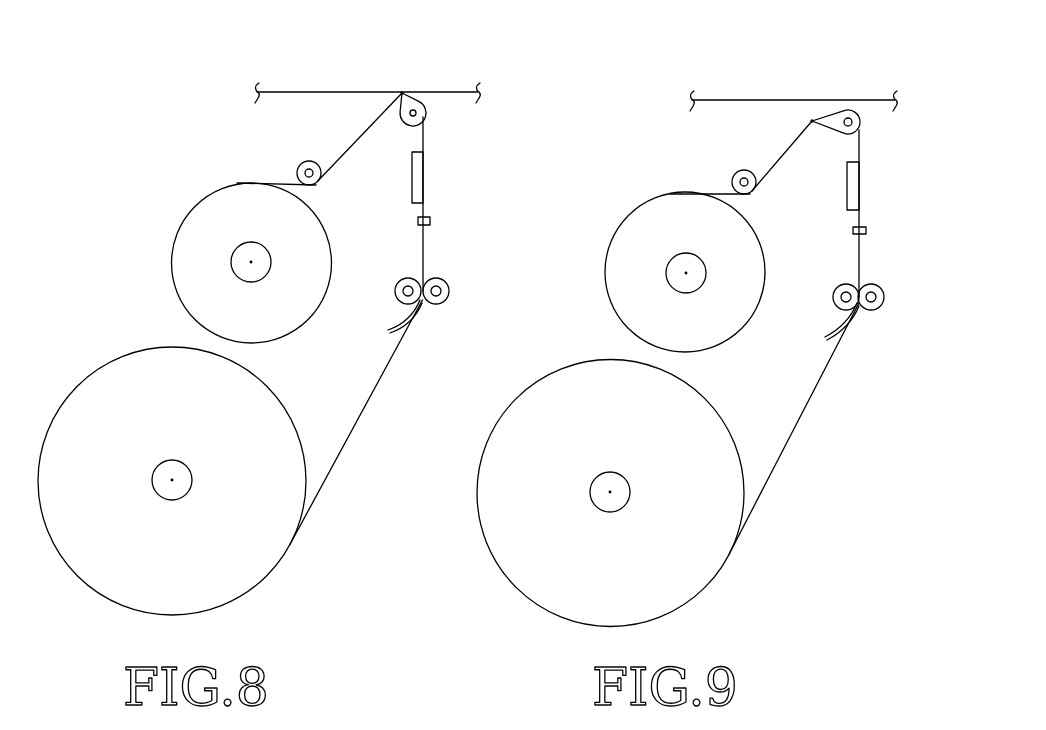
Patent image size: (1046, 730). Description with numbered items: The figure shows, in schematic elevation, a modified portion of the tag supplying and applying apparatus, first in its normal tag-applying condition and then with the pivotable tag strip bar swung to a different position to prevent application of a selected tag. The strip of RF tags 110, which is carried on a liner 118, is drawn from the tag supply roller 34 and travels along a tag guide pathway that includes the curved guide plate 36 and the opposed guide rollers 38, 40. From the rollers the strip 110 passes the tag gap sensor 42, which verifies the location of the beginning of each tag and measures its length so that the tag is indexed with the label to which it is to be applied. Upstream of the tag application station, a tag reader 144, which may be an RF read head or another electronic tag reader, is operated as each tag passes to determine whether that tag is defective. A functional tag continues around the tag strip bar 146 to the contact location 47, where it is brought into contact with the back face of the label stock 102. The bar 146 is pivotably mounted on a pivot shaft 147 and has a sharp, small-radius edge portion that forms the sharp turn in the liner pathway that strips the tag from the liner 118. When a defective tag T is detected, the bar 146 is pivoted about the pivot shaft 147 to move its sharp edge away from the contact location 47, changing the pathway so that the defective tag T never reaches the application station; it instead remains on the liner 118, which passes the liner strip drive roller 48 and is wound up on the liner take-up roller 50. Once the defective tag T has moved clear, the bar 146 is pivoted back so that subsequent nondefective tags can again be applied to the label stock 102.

In FIG. 8, the tag supply roller 34 is at (178, 492).
In FIG. 9, the tag supply roller 34 is at (618, 502).
In FIG. 8, the curved guide plate 36 is at (392, 332).
In FIG. 9, the curved guide plate 36 is at (828, 337).
In FIG. 8, the guide roller 38 is at (397, 300).
In FIG. 9, the guide roller 38 is at (833, 297).
In FIG. 8, the guide roller 40 is at (445, 300).
In FIG. 9, the guide roller 40 is at (873, 308).
In FIG. 8, the tag gap sensor 42 is at (430, 220).
In FIG. 9, the tag gap sensor 42 is at (866, 230).
In FIG. 8, the contact location 47 is at (402, 92).
In FIG. 8, the liner strip drive roller 48 is at (318, 184).
In FIG. 9, the liner strip drive roller 48 is at (752, 191).
In FIG. 8, the liner take-up roller 50 is at (251, 273).
In FIG. 9, the liner take-up roller 50 is at (690, 283).
In FIG. 8, the label stock 102 is at (437, 92).
In FIG. 9, the label stock 102 is at (868, 100).
In FIG. 8, the strip of RF tags 110 is at (340, 450).
In FIG. 9, the strip of RF tags 110 is at (758, 497).
In FIG. 8, the liner 118 is at (293, 185).
In FIG. 9, the liner 118 is at (723, 195).
In FIG. 8, the tag reader 144 is at (412, 185).
In FIG. 9, the tag reader 144 is at (847, 198).
In FIG. 8, the tag strip bar 146 is at (426, 108).
In FIG. 9, the tag strip bar 146 is at (837, 112).
In FIG. 8, the pivot shaft 147 is at (426, 118).
In FIG. 9, the pivot shaft 147 is at (845, 130).
In FIG. 9, the defective tag T is at (811, 120).